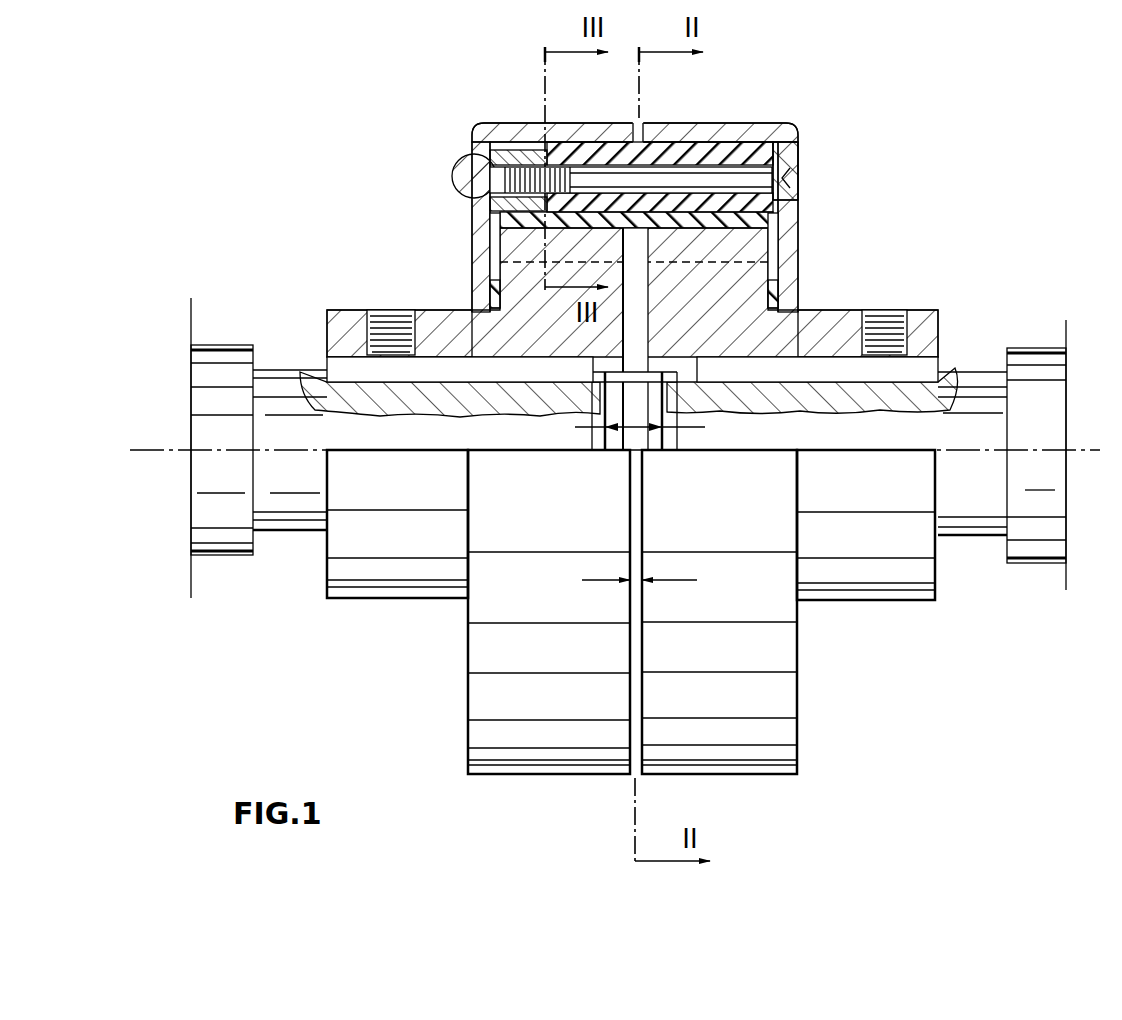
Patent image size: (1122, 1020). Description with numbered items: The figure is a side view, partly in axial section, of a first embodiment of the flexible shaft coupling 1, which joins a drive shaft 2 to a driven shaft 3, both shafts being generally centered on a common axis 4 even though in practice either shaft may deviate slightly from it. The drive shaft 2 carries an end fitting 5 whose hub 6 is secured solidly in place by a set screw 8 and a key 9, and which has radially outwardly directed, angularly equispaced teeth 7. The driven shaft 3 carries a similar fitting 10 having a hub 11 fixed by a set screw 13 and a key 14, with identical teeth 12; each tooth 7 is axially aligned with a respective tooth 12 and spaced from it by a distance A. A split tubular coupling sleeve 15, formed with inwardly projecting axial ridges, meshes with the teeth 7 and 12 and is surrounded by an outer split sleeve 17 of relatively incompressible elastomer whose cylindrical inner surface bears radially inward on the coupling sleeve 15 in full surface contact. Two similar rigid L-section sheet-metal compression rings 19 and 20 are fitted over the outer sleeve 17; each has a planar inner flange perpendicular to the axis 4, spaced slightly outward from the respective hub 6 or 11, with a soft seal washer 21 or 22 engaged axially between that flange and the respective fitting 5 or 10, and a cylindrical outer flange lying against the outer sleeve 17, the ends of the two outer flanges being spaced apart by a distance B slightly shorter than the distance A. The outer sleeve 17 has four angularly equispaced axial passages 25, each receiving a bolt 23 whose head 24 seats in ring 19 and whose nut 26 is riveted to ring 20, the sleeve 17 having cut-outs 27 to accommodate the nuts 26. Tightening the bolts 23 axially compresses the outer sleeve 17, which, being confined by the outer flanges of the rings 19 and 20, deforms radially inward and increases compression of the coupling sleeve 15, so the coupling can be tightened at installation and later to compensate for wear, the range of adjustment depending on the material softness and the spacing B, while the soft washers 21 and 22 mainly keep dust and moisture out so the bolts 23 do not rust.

The flexible shaft coupling 1 is at (810, 700).
The drive shaft 2 is at (975, 510).
The driven shaft 3 is at (280, 505).
The common axis 4 is at (140, 450).
The end fitting 5 is at (893, 560).
The hub 6 is at (940, 318).
The teeth 7 is at (795, 248).
The set screw 8 is at (895, 318).
The key 9 is at (940, 370).
The fitting 10 is at (360, 565).
The hub 11 is at (340, 320).
The teeth 12 is at (478, 267).
The set screw 13 is at (377, 312).
The key 14 is at (335, 357).
The tubular coupling sleeve 15 is at (480, 238).
The outer split sleeve 17 is at (748, 145).
The compression ring 19 is at (770, 642).
The compression ring 20 is at (490, 638).
The seal washer 21 is at (795, 288).
The seal washer 22 is at (480, 298).
The bolt 23 is at (793, 128).
The head 24 is at (800, 188).
The holes or passages 25 is at (678, 160).
The nut 26 is at (457, 168).
The cut-outs 27 is at (507, 125).
The distance A is at (640, 440).
The distance B is at (645, 578).